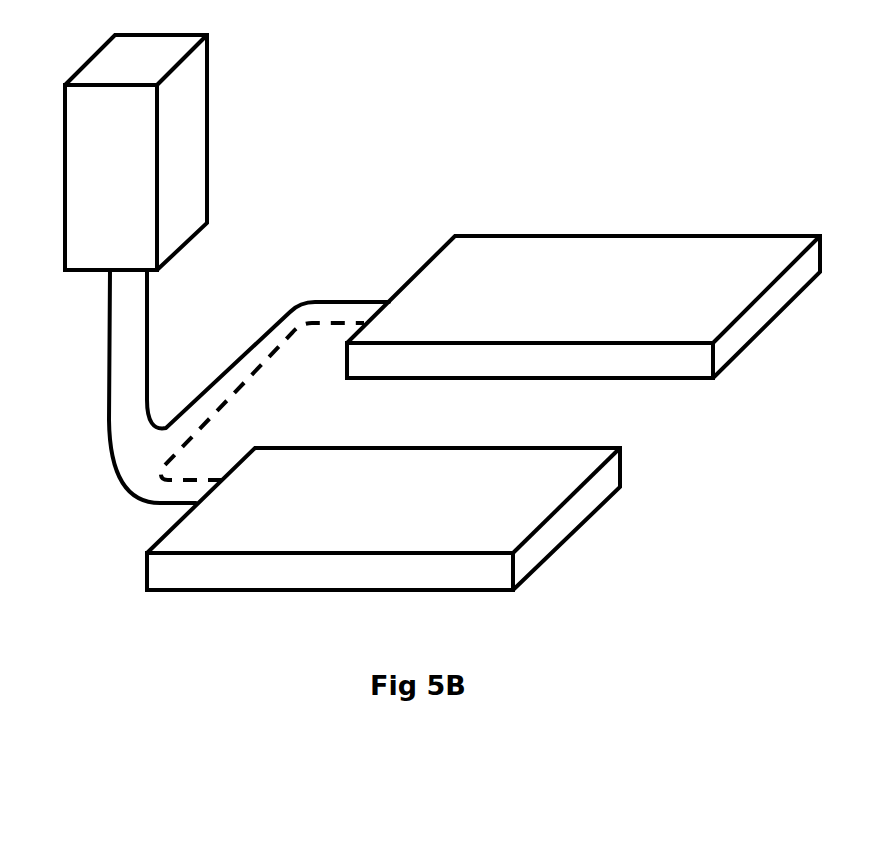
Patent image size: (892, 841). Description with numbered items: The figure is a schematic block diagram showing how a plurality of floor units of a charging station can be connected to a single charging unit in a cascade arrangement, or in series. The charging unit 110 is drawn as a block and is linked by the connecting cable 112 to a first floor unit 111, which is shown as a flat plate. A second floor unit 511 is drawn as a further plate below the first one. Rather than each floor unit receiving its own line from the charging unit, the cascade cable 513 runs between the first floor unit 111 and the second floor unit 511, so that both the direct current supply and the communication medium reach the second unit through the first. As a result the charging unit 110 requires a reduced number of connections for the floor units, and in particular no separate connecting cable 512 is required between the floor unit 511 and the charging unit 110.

The charging unit 110 is at (207, 138).
The floor unit 111 is at (545, 236).
The connecting cable 112 is at (147, 327).
The second floor unit 511 is at (533, 448).
The connecting cable 512 is at (110, 342).
The cascade cable 513 is at (240, 387).